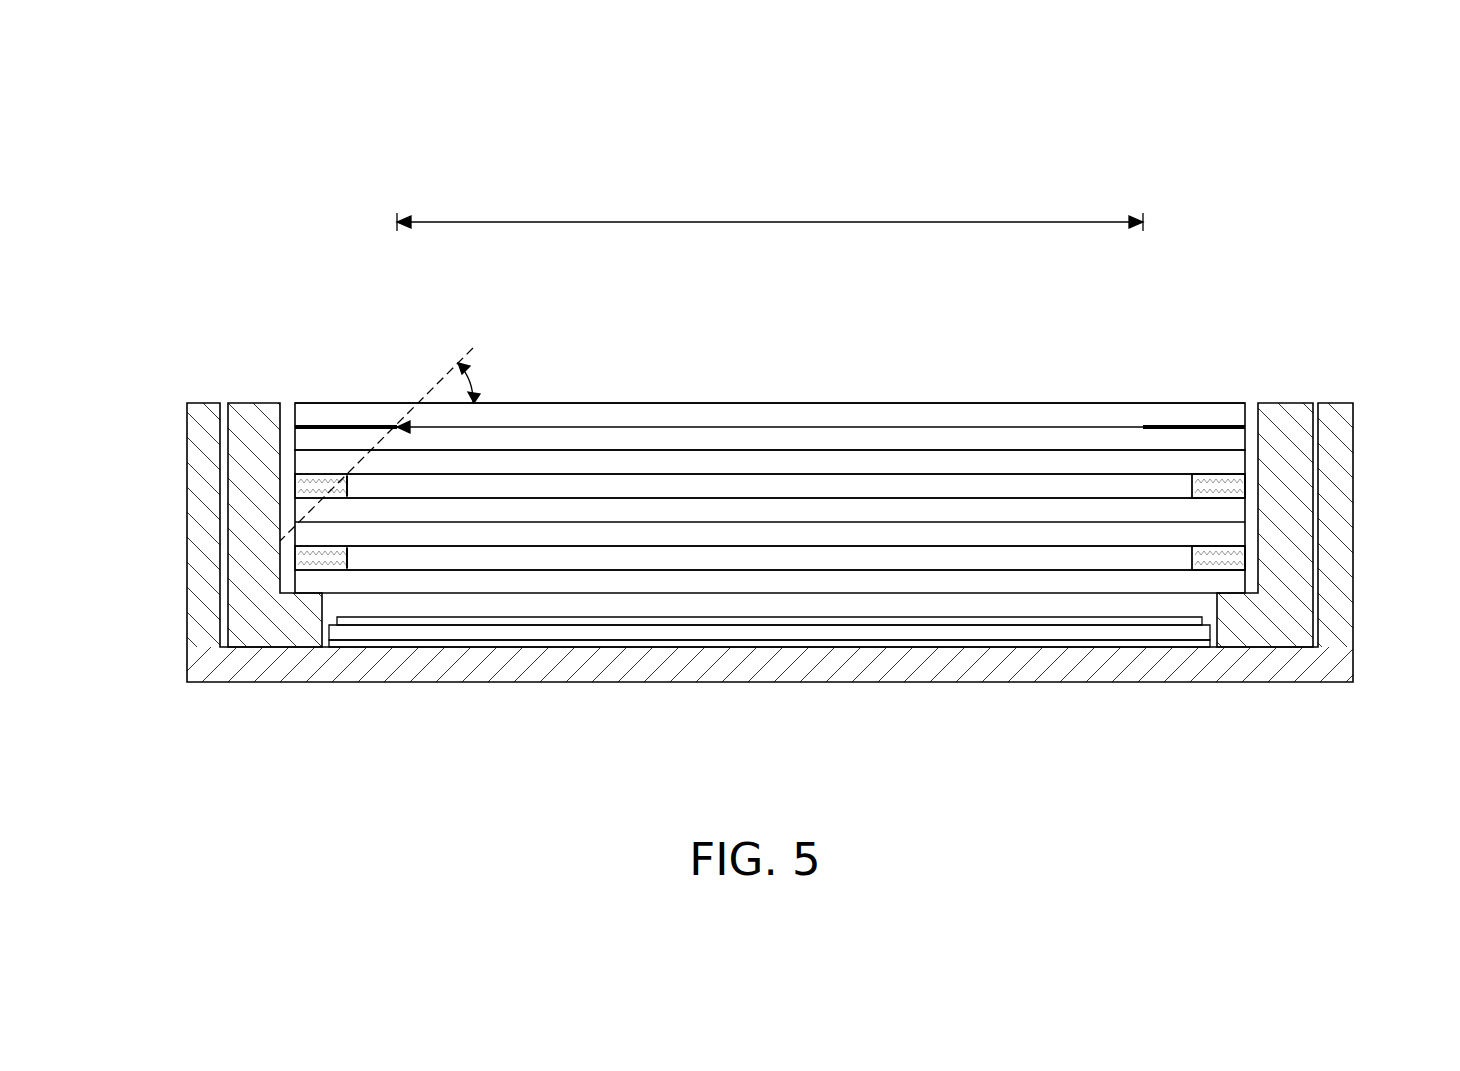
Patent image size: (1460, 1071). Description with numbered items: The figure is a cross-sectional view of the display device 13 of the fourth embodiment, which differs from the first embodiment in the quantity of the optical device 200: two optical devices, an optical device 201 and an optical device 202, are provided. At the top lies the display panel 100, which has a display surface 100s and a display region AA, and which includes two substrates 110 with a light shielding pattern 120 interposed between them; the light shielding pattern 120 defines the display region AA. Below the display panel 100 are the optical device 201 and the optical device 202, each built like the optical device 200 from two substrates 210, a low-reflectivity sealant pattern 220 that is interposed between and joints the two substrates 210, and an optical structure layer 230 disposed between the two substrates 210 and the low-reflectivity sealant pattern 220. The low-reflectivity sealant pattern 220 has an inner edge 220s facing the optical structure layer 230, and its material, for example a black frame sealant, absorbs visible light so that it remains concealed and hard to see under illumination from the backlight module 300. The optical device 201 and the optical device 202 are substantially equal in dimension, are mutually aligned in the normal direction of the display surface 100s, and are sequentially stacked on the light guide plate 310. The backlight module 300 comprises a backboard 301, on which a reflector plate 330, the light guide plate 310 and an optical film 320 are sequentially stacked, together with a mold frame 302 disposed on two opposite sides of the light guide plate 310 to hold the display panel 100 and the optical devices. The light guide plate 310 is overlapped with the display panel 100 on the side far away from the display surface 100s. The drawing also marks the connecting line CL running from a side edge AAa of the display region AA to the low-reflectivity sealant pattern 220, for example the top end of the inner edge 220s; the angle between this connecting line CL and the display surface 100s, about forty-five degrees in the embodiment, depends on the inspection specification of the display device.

The display device 13 is at (1393, 823).
The display panel 100 is at (1110, 318).
The display surface 100s is at (628, 403).
The substrates 110 is at (1032, 418).
The light shielding pattern 120 is at (1158, 427).
The optical device 200 is at (990, 763).
The optical device 201 is at (1250, 558).
The optical device 202 is at (1260, 490).
The substrates 210 is at (973, 578).
The low-reflectivity sealant pattern 220 is at (1192, 487).
The inner edge 220s is at (347, 487).
The optical structure layer 230 is at (1094, 487).
The backlight module 300 is at (145, 20).
The backboard 301 is at (785, 665).
The mold frame 302 is at (247, 630).
The light guide plate 310 is at (643, 633).
The optical film 320 is at (573, 620).
The reflector plate 330 is at (717, 643).
The display region AA is at (770, 205).
The side edge AAa is at (408, 428).
The connecting line CL is at (436, 385).